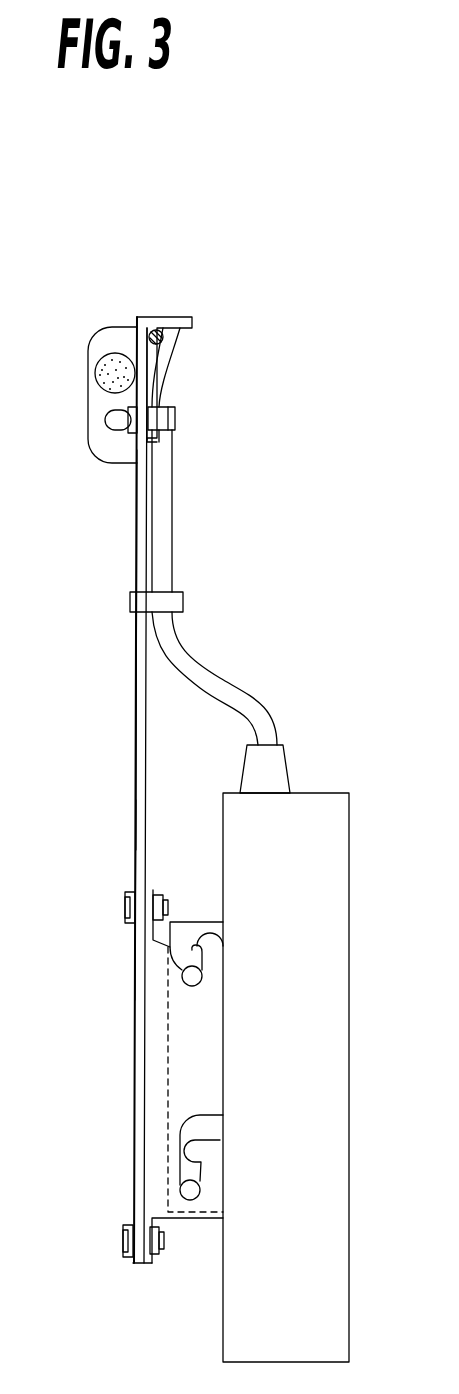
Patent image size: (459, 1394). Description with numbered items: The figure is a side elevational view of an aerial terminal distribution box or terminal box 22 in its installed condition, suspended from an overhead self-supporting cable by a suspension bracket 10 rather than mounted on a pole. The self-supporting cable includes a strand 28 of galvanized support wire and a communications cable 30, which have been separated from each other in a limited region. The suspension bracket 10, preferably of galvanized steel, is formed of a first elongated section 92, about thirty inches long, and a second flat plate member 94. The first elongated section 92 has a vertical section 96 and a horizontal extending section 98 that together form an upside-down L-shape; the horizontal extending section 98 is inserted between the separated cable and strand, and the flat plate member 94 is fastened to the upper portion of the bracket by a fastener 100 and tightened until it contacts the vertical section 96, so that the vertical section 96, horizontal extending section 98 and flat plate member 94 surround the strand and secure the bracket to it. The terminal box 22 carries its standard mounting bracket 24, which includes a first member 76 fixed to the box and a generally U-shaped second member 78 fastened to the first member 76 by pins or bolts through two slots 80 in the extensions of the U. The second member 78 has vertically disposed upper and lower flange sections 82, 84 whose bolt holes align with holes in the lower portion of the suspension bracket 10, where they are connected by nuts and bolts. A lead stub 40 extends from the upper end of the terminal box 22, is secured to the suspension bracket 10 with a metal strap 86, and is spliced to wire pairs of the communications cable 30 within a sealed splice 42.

The suspension bracket 10 is at (140, 745).
The terminal box 22 is at (335, 1035).
The mounting bracket 24 is at (163, 1197).
The strand 28 is at (154, 330).
The communications cable 30 is at (88, 388).
The lead stub 40 is at (222, 678).
The splice 42 is at (103, 445).
The first member 76 is at (187, 928).
The second member 78 is at (153, 1060).
The slots 80 is at (203, 943).
The upper flange section 82 is at (148, 888).
The lower flange section 84 is at (143, 1263).
The metal strap 86 is at (184, 597).
The first elongated section 92 is at (140, 699).
The flat plate member 94 is at (166, 377).
The vertical section 96 is at (134, 837).
The horizontal extending section 98 is at (177, 322).
The fastener 100 is at (176, 413).